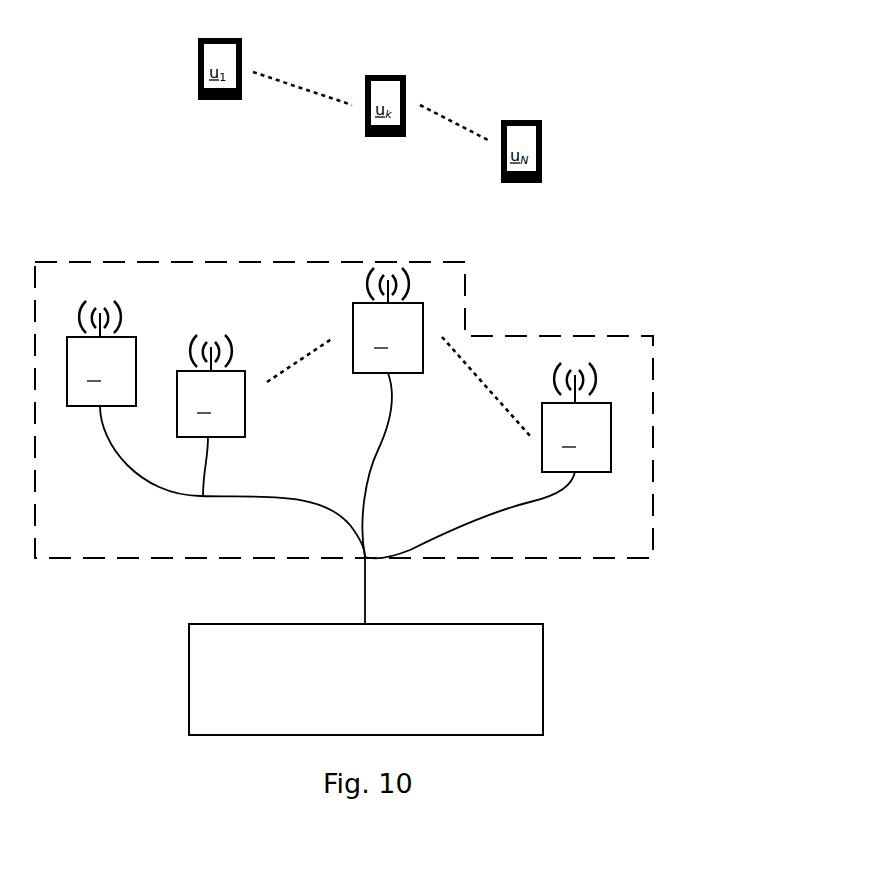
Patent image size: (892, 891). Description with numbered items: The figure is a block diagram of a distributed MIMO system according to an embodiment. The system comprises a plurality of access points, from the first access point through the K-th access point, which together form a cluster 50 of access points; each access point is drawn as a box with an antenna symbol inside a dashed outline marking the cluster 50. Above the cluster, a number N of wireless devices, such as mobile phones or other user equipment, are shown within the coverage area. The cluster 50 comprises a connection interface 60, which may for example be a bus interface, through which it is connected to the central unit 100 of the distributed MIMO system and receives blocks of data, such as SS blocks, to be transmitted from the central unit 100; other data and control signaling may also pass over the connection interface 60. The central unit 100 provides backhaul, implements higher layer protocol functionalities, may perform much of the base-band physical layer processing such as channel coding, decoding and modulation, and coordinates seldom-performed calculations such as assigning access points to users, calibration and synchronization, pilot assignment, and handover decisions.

The cluster of access points 50 is at (653, 346).
The connection interface 60 is at (365, 568).
The central unit 100 is at (349, 703).